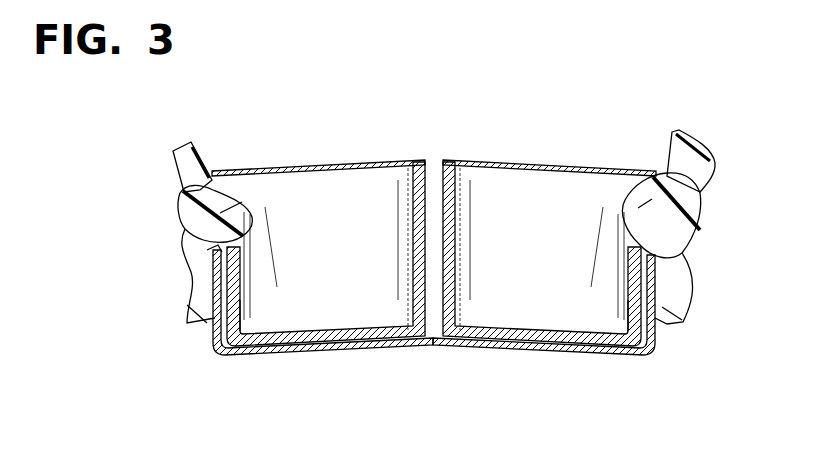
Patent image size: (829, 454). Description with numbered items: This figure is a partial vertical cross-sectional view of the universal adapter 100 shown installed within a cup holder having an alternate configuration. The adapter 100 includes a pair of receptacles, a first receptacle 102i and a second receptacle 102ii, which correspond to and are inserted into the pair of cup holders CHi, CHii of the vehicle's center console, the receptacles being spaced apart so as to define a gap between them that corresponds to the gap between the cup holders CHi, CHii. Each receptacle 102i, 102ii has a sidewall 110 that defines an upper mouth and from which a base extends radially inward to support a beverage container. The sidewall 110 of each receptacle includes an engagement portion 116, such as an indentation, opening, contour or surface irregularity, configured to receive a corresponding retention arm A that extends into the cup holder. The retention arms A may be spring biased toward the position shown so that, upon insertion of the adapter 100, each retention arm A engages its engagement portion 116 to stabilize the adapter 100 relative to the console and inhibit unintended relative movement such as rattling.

The adapter 100 is at (441, 126).
The first receptacle 102i is at (322, 148).
The second receptacle 102ii is at (549, 148).
The sidewall 110 is at (250, 311).
The engagement portion 116 is at (236, 251).
The retention arm A is at (220, 211).
The first cup holder CHi is at (205, 364).
The second cup holder CHii is at (665, 364).